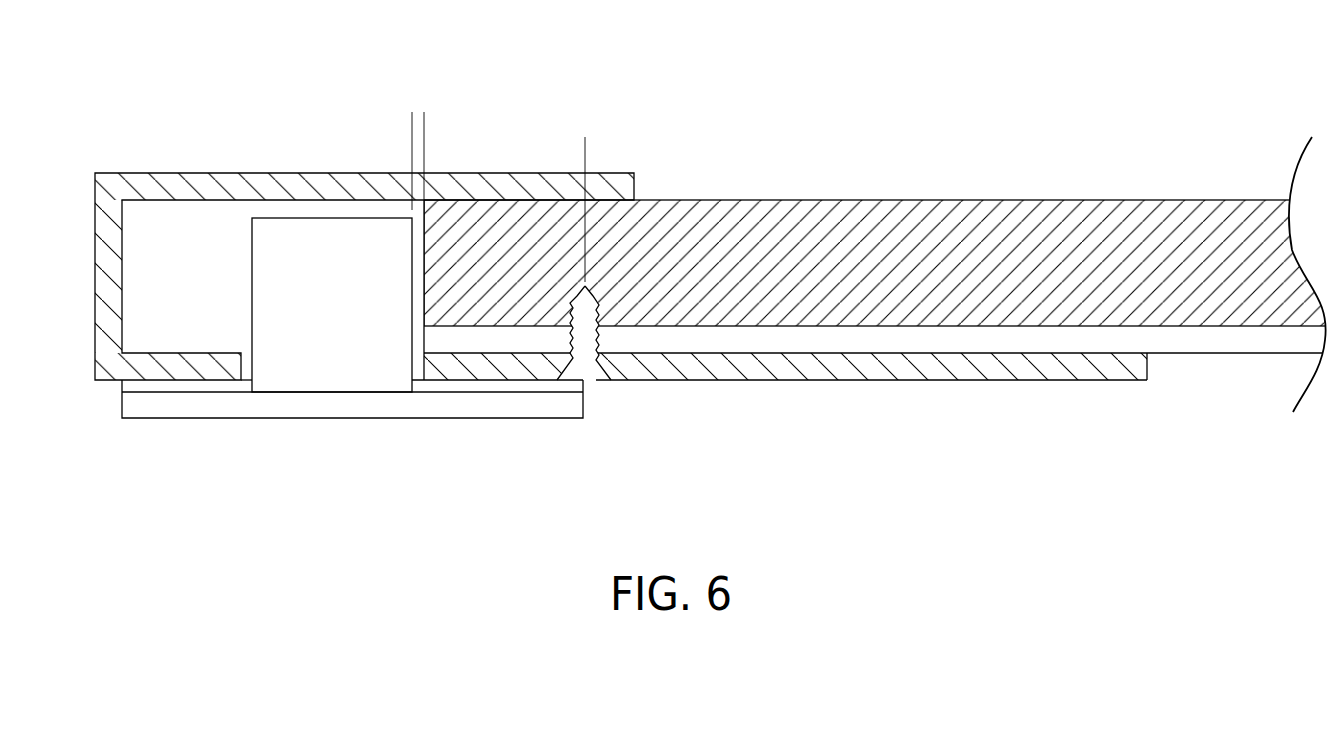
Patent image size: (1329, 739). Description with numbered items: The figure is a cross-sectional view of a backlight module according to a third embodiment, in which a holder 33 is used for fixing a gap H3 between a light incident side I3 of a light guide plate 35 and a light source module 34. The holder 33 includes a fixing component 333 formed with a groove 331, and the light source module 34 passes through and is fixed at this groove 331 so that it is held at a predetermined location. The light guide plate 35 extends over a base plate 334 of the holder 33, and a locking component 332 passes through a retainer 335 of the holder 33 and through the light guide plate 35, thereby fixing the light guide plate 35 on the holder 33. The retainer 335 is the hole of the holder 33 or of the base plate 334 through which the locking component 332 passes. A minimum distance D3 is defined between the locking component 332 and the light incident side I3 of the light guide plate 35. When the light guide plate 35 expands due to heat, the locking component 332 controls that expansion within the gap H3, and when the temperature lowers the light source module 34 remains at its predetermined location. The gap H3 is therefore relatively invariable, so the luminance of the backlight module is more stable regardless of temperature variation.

The holder 33 is at (581, 259).
The fixing component 333 is at (102, 287).
The groove 331 is at (250, 367).
The locking component 332 is at (580, 373).
The base plate 334 is at (730, 372).
The retainer 335 is at (595, 382).
The light source module 34 is at (340, 367).
The light guide plate 35 is at (860, 210).
The gap H3 is at (458, 125).
The minimum distance D3 is at (585, 151).
The light incident side I3 is at (425, 282).